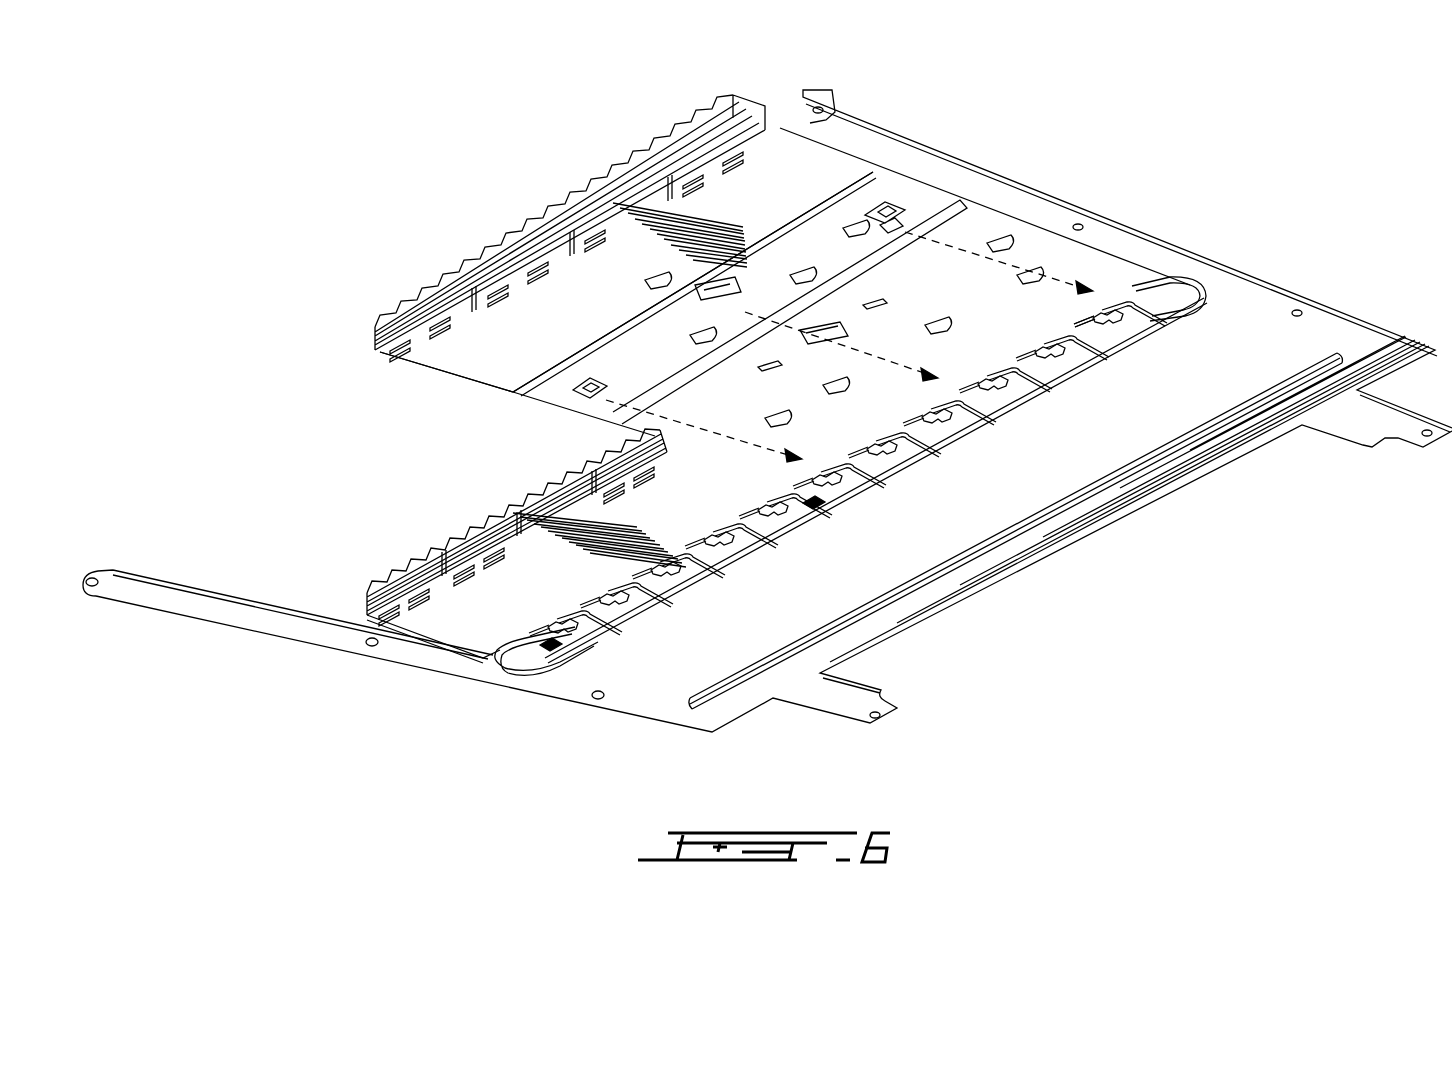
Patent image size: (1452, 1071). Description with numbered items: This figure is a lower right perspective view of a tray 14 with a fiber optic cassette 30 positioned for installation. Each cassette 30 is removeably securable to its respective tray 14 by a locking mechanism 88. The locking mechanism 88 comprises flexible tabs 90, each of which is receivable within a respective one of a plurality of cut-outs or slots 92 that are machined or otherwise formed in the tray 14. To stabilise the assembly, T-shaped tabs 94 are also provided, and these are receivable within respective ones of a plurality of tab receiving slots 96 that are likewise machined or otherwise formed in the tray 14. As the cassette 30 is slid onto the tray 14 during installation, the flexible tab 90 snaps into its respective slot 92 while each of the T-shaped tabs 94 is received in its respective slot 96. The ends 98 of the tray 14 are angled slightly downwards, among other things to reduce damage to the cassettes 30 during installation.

The tray 14 is at (1248, 272).
The fiber optic cassette 30 is at (540, 577).
The locking mechanism 88 is at (690, 292).
The flexible tab 90 is at (718, 286).
The cut-out/slot 92 is at (1037, 345).
The T-shaped tab 94 is at (890, 203).
The tab receiving slot 96 is at (1160, 303).
The end of the tray 98 is at (1094, 314).